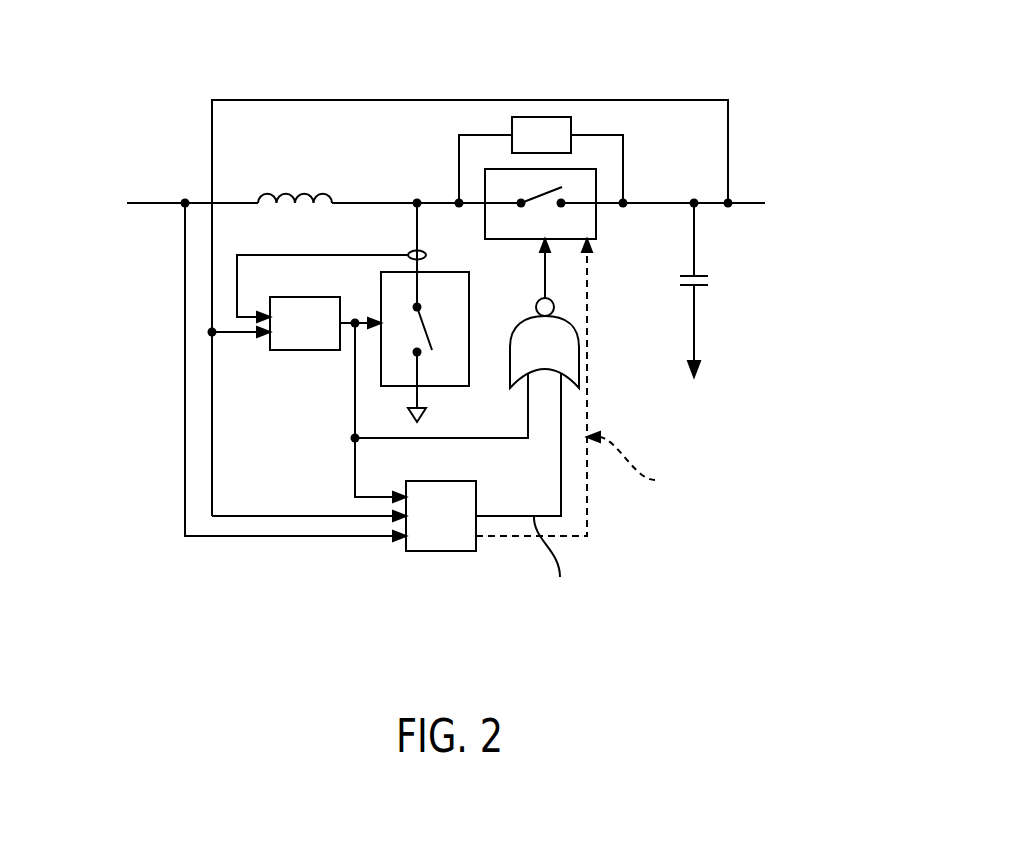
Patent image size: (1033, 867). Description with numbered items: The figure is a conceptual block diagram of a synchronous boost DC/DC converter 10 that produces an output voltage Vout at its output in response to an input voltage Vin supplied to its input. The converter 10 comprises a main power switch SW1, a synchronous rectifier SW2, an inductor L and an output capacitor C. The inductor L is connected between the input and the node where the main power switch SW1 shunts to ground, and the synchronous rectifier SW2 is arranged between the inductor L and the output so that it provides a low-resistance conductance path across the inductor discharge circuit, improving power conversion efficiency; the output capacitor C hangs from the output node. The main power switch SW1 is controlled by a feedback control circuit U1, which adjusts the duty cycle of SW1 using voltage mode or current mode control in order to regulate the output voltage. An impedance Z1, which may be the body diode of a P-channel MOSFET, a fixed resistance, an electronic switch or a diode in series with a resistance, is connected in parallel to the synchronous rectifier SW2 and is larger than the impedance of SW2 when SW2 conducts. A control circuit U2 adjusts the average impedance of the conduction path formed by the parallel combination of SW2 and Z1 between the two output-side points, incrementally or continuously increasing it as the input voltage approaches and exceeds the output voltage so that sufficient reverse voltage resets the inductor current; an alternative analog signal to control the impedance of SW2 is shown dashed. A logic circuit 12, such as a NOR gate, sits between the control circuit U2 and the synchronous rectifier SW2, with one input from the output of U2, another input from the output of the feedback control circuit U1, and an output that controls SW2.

The synchronous boost DC/DC converter 10 is at (184, 84).
The logic circuit 12 is at (519, 327).
The inductor L is at (295, 182).
The output capacitor C is at (704, 290).
The impedance Z1 is at (541, 160).
The main power switch SW1 is at (425, 347).
The synchronous rectifier SW2 is at (540, 204).
The feedback control circuit U1 is at (305, 323).
The control circuit U2 is at (441, 516).